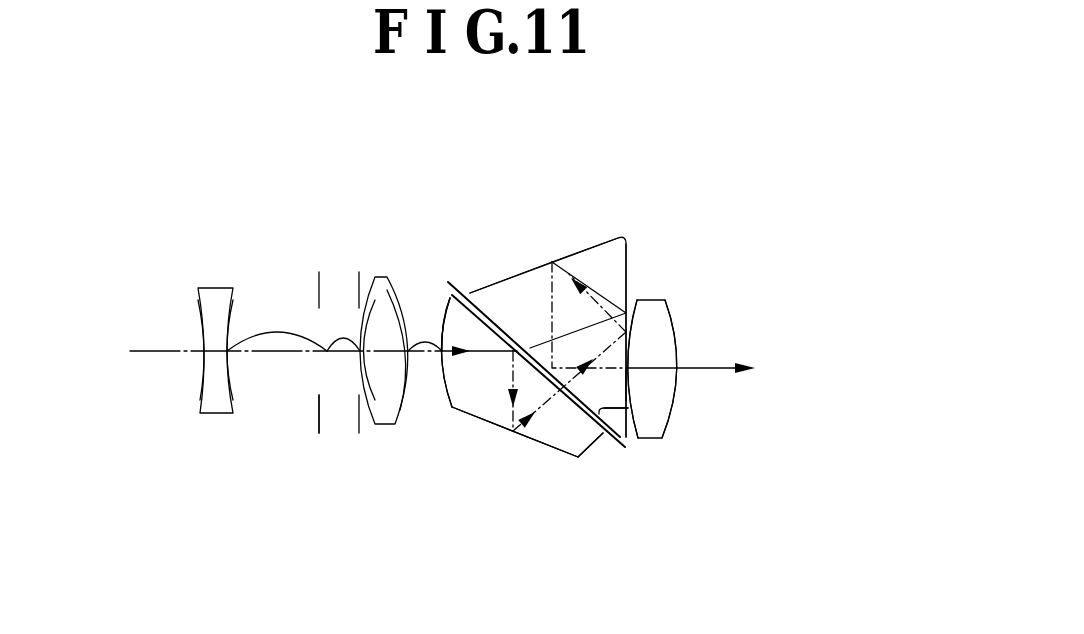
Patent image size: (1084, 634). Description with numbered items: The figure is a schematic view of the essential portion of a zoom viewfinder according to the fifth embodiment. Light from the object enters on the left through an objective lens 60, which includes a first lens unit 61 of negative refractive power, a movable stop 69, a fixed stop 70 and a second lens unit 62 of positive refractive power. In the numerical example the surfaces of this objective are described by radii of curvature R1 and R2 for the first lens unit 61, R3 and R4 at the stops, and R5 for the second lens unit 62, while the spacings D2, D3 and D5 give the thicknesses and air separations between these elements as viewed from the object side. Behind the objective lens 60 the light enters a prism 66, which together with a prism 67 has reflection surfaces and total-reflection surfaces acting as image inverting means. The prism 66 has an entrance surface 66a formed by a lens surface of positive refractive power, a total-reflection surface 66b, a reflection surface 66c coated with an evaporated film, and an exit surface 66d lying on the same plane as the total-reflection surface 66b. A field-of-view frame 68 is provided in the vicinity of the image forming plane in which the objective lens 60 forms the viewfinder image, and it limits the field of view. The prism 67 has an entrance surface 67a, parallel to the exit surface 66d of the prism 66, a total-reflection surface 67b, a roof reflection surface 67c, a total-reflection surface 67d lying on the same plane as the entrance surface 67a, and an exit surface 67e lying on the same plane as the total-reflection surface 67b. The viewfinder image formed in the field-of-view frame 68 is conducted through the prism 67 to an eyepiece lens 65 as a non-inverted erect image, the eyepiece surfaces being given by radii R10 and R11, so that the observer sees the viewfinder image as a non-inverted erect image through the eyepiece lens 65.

The objective lens 60 is at (422, 173).
The first lens unit 61 is at (210, 287).
The movable stop 69 is at (318, 284).
The fixed stop 70 is at (358, 284).
The second lens unit 62 is at (387, 278).
The prism 66 is at (477, 481).
The entrance surface 66a is at (418, 533).
The total-reflection surface 66b is at (450, 299).
The reflection surface 66c is at (518, 511).
The exit surface 66d is at (562, 541).
The prism 67 is at (612, 248).
The entrance surface 67a is at (665, 440).
The total-reflection surface 67b is at (626, 263).
The roof reflection surface 67c is at (572, 256).
The total-reflection surface 67d is at (502, 293).
The exit surface 67e is at (630, 377).
The field-of-view frame 68 is at (601, 509).
The eyepiece lens 65 is at (673, 328).
The radius of curvature of first lens surface R1 is at (197, 473).
The radius of curvature of second lens surface R2 is at (245, 473).
The radius of curvature of third lens surface R3 is at (300, 472).
The radius of curvature of fourth lens surface R4 is at (355, 472).
The radius of curvature of fifth lens surface R5 is at (397, 472).
The radius of curvature of tenth lens surface R10 is at (634, 412).
The radius of curvature of eleventh lens surface R11 is at (678, 400).
The second lens thickness or air separation D2 is at (277, 323).
The third lens thickness or air separation D3 is at (343, 326).
The fifth lens thickness or air separation D5 is at (425, 327).